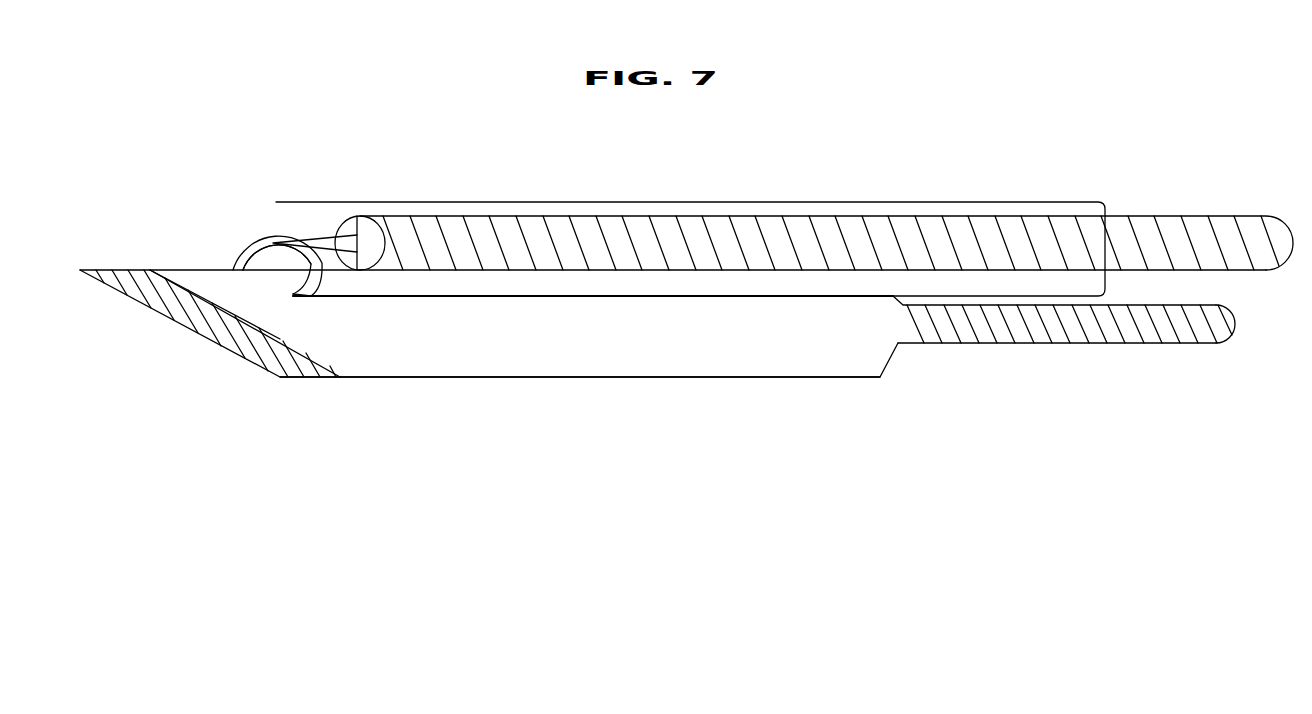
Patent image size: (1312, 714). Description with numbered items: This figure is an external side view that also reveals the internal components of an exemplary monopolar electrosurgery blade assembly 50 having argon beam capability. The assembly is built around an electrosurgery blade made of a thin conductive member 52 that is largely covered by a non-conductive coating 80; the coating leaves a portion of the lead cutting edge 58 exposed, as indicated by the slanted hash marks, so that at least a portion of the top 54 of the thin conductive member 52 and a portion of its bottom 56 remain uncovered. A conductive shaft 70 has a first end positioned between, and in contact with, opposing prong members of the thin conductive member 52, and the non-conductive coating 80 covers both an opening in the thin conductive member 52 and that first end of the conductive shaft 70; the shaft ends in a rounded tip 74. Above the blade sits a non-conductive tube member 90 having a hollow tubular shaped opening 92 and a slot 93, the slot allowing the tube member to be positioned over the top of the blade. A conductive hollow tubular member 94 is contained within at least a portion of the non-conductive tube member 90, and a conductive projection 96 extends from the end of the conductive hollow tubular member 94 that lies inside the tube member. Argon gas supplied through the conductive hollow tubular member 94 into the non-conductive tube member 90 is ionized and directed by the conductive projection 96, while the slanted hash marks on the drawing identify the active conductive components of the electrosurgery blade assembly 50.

The electrosurgery blade assembly 50 is at (775, 120).
The thin conductive member 52 is at (157, 297).
The top of the thin conductive member 54 is at (112, 270).
The bottom of the thin conductive member 56 is at (325, 378).
The lead cutting edge 58 is at (211, 339).
The conductive shaft 70 is at (1037, 323).
The rounded shaft tip 74 is at (1233, 321).
The non-conductive coating 80 is at (618, 350).
The non-conductive tube member 90 is at (332, 213).
The hollow tubular shaped opening 92 is at (257, 245).
The slot 93 is at (293, 278).
The conductive hollow tubular member 94 is at (477, 228).
The conductive projection 96 is at (297, 242).